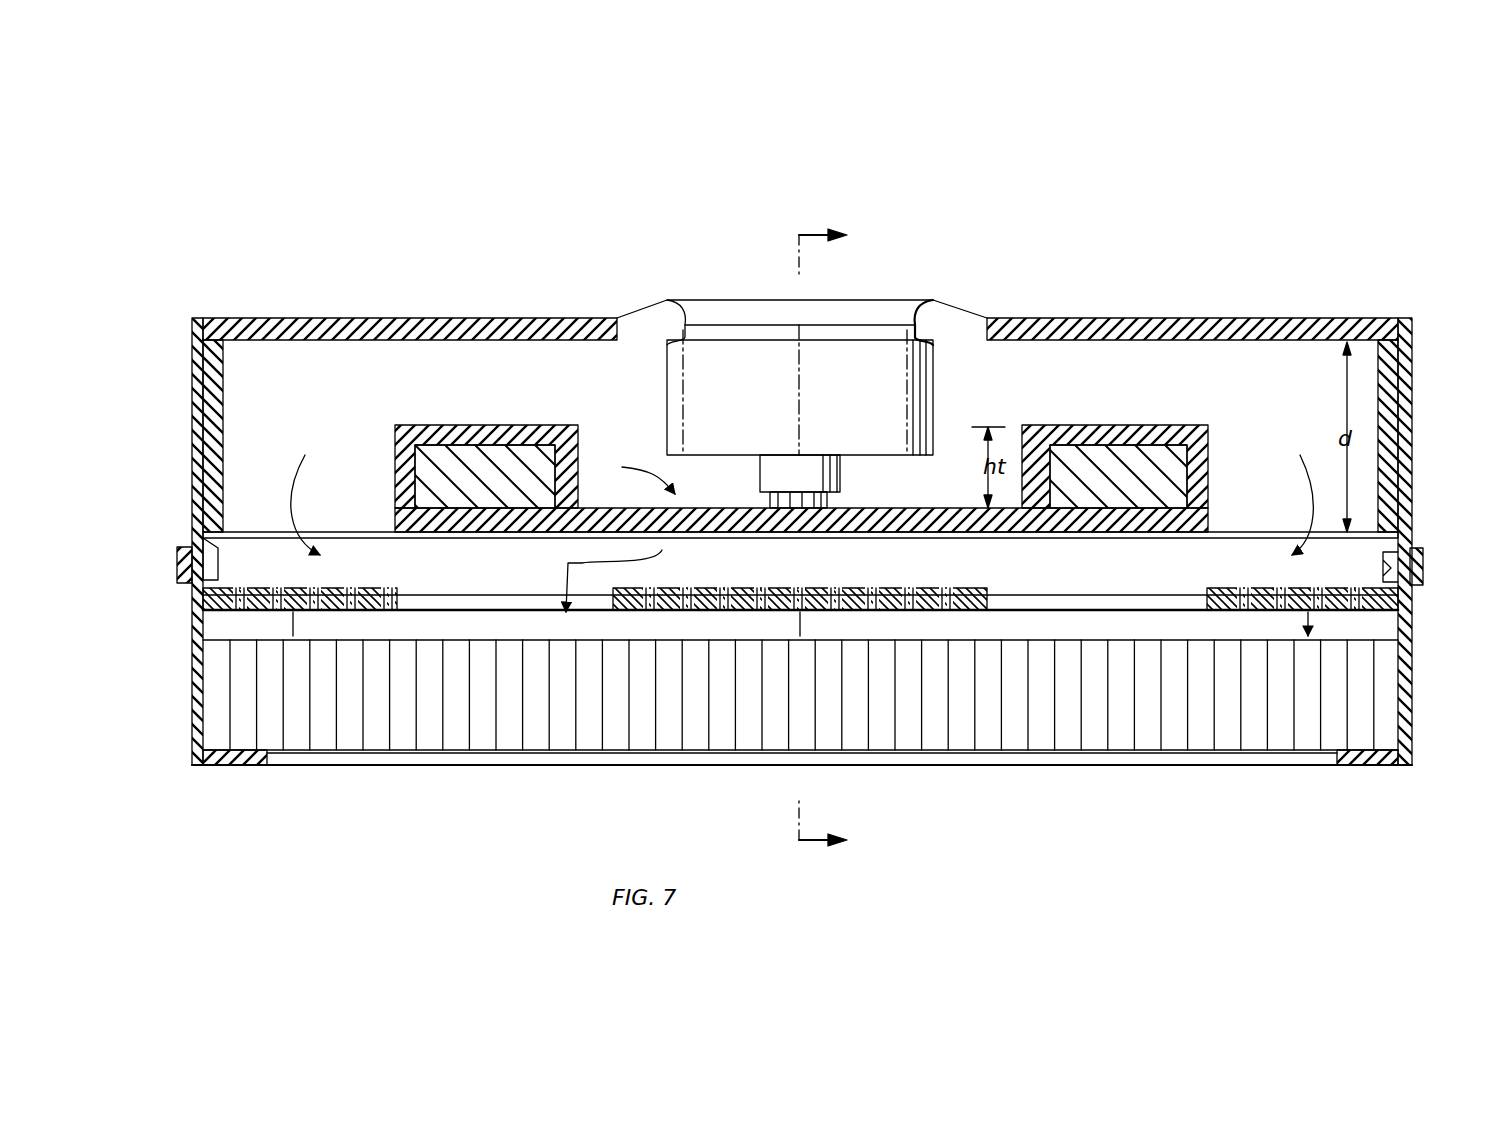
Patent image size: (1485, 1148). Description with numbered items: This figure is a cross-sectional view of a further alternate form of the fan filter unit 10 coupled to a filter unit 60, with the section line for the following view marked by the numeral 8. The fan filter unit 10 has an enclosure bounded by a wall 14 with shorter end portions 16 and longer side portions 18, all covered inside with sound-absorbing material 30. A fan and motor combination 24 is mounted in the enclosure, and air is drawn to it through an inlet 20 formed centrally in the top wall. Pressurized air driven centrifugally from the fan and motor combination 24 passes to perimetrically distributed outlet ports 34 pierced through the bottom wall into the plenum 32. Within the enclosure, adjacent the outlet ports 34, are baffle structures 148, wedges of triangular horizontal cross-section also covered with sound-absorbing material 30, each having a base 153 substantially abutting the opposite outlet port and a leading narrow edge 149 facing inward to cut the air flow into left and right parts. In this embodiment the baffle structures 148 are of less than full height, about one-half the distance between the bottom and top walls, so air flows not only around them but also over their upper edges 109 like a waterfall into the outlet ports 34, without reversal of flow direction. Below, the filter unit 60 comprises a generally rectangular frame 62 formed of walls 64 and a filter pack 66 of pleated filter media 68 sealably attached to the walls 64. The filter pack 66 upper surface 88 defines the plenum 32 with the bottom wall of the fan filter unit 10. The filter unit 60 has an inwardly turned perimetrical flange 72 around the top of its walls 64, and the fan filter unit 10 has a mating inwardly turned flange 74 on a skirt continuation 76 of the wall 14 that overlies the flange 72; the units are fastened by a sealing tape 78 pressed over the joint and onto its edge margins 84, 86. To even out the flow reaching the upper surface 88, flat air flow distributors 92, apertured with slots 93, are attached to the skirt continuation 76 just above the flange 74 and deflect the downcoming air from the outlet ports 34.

The fan filter unit 10 is at (457, 282).
The section line 8- 8 is at (835, 541).
The wall 14 is at (190, 428).
The end portions 16 is at (235, 370).
The side portions 18 is at (1413, 378).
The inlet 20 is at (955, 306).
The fan and motor combination 24 is at (854, 396).
The sound-absorbing material 30 is at (1285, 342).
The plenum 32 is at (514, 580).
The outlet ports 34 is at (378, 525).
The filter unit 60 is at (1420, 702).
The frame 62 is at (1408, 768).
The walls 64 is at (192, 690).
The filter pack 66 is at (1075, 765).
The filter media 68 is at (555, 705).
The perimetrical flange 72 is at (180, 562).
The flange 74 is at (203, 520).
The skirt continuation 76 is at (1385, 548).
The sealing tape 78 is at (1422, 572).
The edge margin 84 is at (1413, 548).
The edge margin 86 is at (1414, 622).
The upper surface 88 is at (1028, 634).
The air flow distributors 92 is at (258, 590).
The slots 93 is at (355, 588).
The upper edges 109 is at (445, 428).
The baffle structures 148 is at (520, 465).
The leading narrow edge 149 is at (608, 460).
The base 153 is at (395, 485).